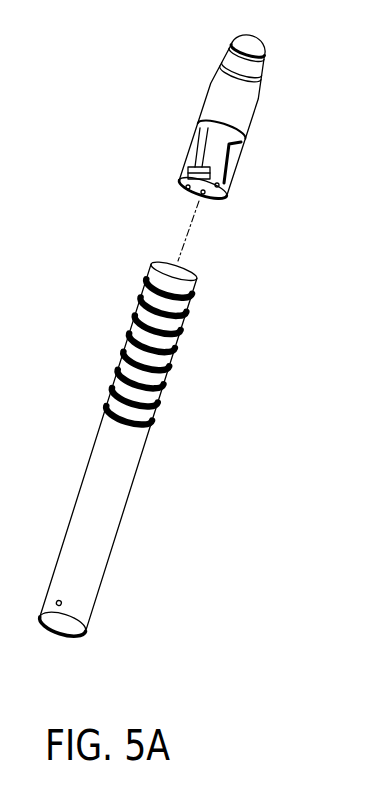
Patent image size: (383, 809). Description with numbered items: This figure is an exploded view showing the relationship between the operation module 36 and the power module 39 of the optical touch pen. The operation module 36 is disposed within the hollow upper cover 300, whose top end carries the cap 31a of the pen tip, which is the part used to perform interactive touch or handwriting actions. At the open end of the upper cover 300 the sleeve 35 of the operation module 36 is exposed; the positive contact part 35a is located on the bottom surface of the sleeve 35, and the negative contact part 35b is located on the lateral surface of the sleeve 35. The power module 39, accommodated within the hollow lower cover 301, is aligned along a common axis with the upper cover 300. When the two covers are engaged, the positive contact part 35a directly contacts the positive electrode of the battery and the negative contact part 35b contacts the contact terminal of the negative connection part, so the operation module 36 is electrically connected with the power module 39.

The cap 31a is at (259, 31).
The upper cover 300 is at (230, 106).
The operation module 36 is at (182, 98).
The negative contact part 35b is at (188, 168).
The sleeve 35 is at (228, 172).
The positive contact part 35a is at (210, 198).
The power module 39 is at (118, 335).
The lower cover 301 is at (107, 478).